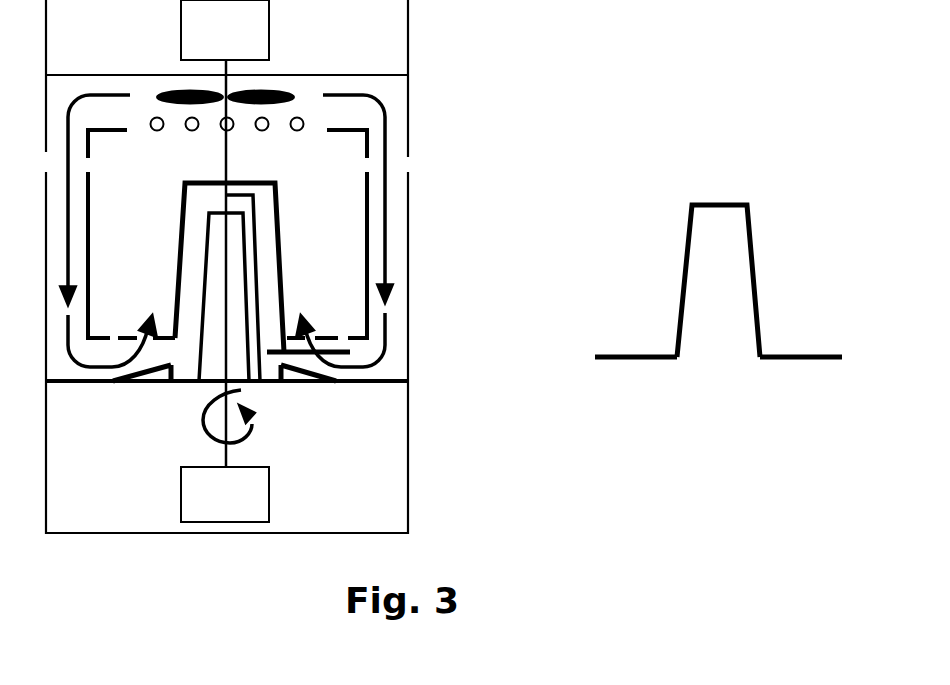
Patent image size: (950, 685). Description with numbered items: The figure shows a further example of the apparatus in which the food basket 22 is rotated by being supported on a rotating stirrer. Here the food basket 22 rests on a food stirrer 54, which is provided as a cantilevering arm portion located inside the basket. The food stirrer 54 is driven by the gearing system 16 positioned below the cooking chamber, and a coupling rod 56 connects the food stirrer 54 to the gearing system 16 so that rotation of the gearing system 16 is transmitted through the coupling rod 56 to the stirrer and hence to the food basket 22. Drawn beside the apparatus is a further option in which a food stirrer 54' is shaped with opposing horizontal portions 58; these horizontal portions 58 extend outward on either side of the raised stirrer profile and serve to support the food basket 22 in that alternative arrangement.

The food basket 22 is at (368, 217).
The food stirrer 54 is at (288, 282).
The coupling rod 56 is at (236, 388).
The gearing system 16 is at (270, 492).
The food stirrer 54' is at (670, 259).
The opposing horizontal portions 58 is at (617, 353).